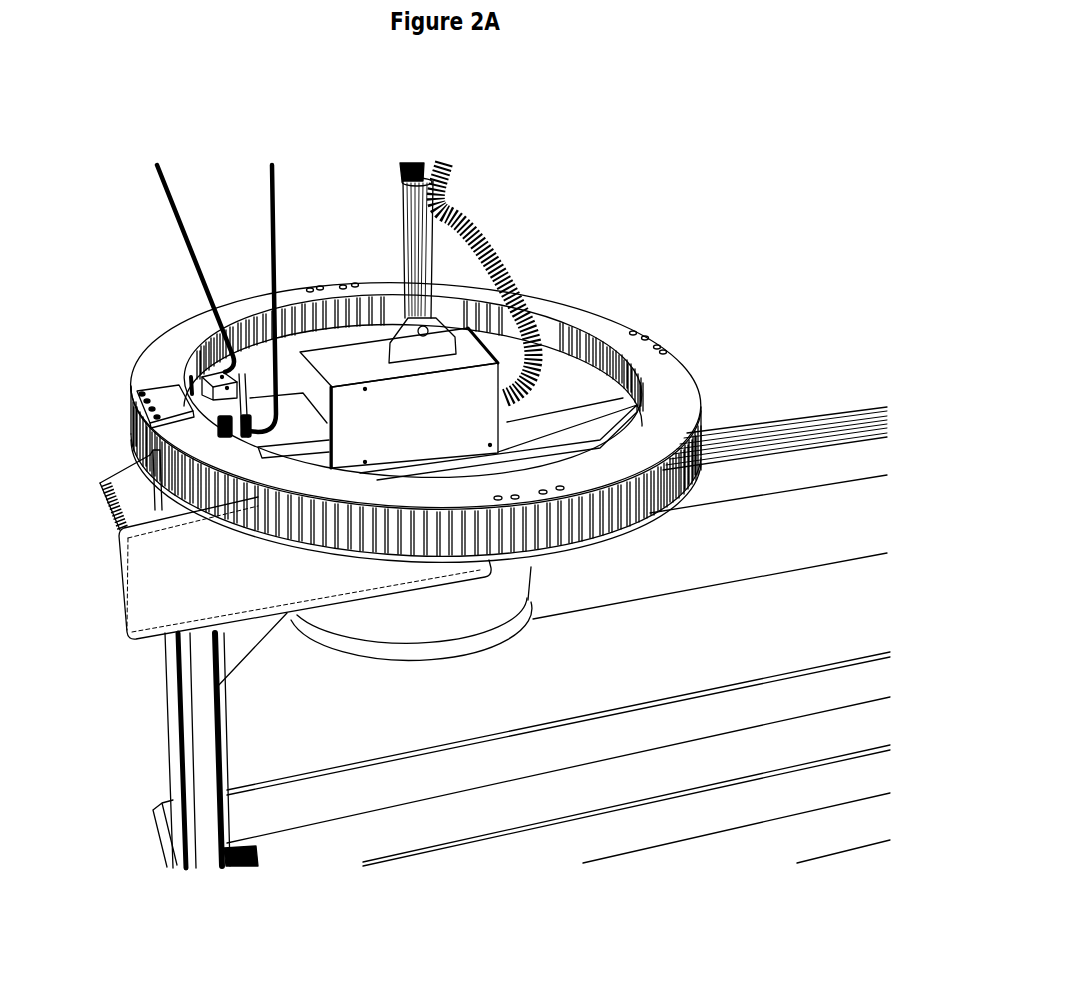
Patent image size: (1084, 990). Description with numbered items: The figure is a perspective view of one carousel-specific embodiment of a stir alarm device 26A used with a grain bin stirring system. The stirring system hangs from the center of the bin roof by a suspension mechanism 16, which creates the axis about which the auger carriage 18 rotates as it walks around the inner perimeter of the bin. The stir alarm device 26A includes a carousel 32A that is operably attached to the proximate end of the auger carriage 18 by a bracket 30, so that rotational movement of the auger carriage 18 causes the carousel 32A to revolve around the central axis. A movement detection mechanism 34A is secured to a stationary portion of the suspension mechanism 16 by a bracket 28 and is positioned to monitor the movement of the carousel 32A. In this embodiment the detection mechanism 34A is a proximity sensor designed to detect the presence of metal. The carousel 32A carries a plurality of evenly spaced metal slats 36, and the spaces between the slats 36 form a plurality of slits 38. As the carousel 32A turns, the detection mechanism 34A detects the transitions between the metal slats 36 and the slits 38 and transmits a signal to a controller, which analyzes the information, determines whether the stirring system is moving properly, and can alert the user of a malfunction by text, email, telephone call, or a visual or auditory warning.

The stir alarm device 26A is at (312, 115).
The suspension mechanism 16 is at (477, 317).
The bracket 28 is at (480, 400).
The carousel 32A is at (692, 402).
The bracket 30 is at (157, 453).
The detection mechanism 34A is at (225, 430).
The metal slats 36 is at (393, 553).
The slits 38 is at (543, 520).
The auger carriage 18 is at (327, 780).